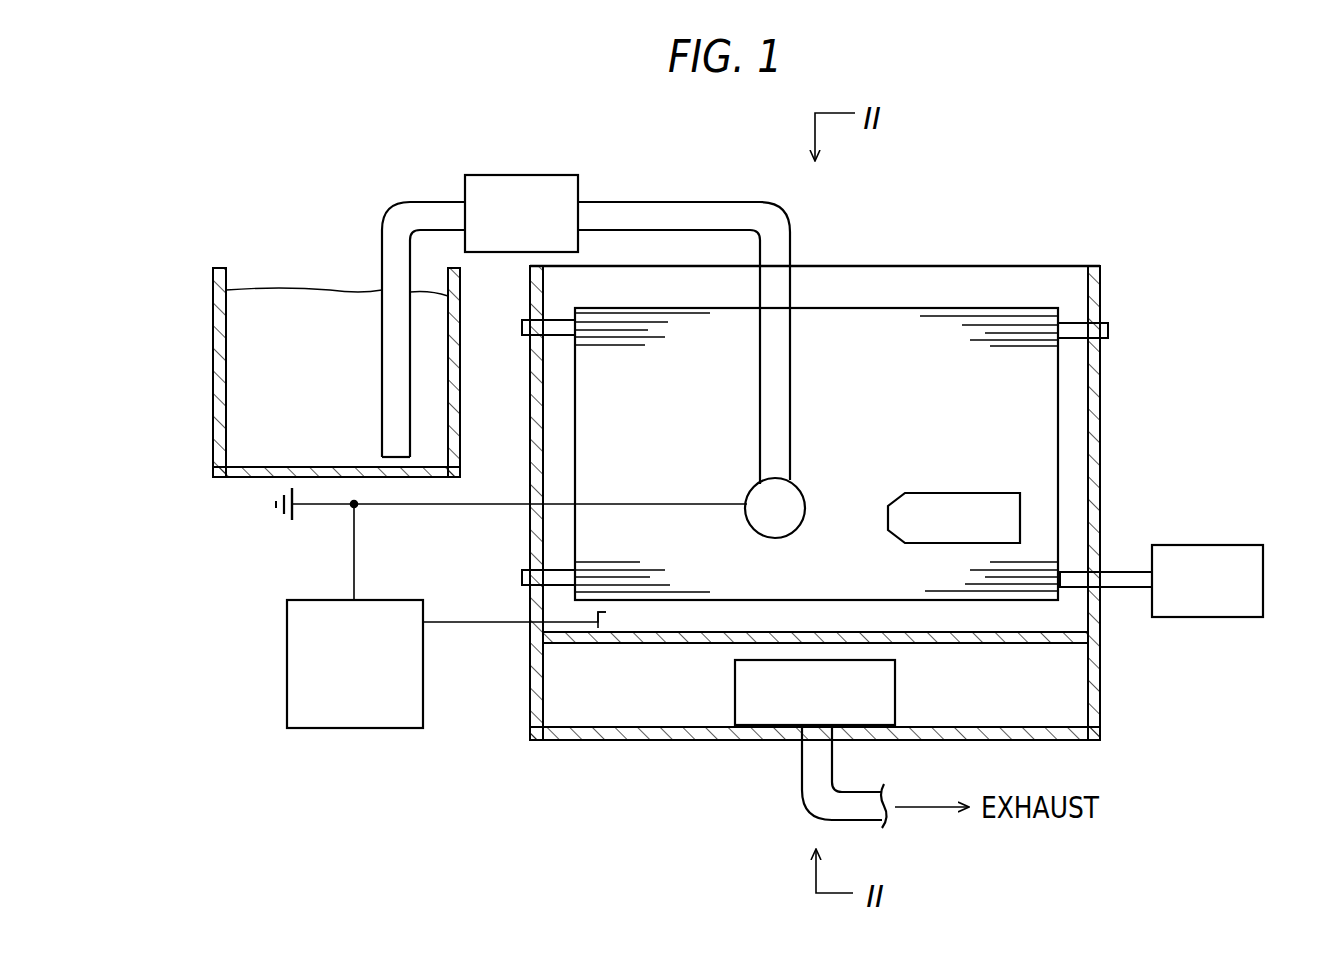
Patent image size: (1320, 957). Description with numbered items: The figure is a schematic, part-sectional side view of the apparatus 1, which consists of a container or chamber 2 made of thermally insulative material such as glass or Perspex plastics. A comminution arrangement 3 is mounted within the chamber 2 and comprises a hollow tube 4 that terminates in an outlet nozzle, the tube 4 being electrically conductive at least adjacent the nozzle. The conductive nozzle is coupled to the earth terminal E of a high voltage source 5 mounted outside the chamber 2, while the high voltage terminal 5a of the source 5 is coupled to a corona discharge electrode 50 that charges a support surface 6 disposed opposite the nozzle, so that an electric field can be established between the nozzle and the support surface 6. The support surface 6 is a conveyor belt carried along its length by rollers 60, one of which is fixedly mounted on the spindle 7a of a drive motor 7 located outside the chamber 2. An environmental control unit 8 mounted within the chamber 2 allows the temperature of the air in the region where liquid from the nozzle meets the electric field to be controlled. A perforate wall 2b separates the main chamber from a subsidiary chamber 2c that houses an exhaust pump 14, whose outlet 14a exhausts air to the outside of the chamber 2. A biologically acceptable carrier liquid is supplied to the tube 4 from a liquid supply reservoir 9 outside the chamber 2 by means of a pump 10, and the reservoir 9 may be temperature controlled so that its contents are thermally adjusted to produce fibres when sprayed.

The apparatus 1 is at (1150, 222).
The container 2 is at (1100, 408).
The perforate wall 2b is at (965, 645).
The subsidiary chamber 2c is at (1065, 697).
The comminution arrangement 3 is at (803, 474).
The hollow tube 4 is at (808, 502).
The high voltage source 5 is at (363, 730).
The high voltage terminal 5a is at (481, 624).
The support surface 6 is at (693, 572).
The drive motor 7 is at (1220, 545).
The spindle 7a is at (1141, 590).
The environmental control unit 8 is at (985, 492).
The liquid supply reservoir 9 is at (239, 478).
The pump 10 is at (514, 175).
The exhaust pump 14 is at (735, 693).
The outlet 14a is at (812, 774).
The corona discharge electrode 50 is at (606, 612).
The rollers 60 is at (1070, 320).
The earth terminal E is at (354, 545).